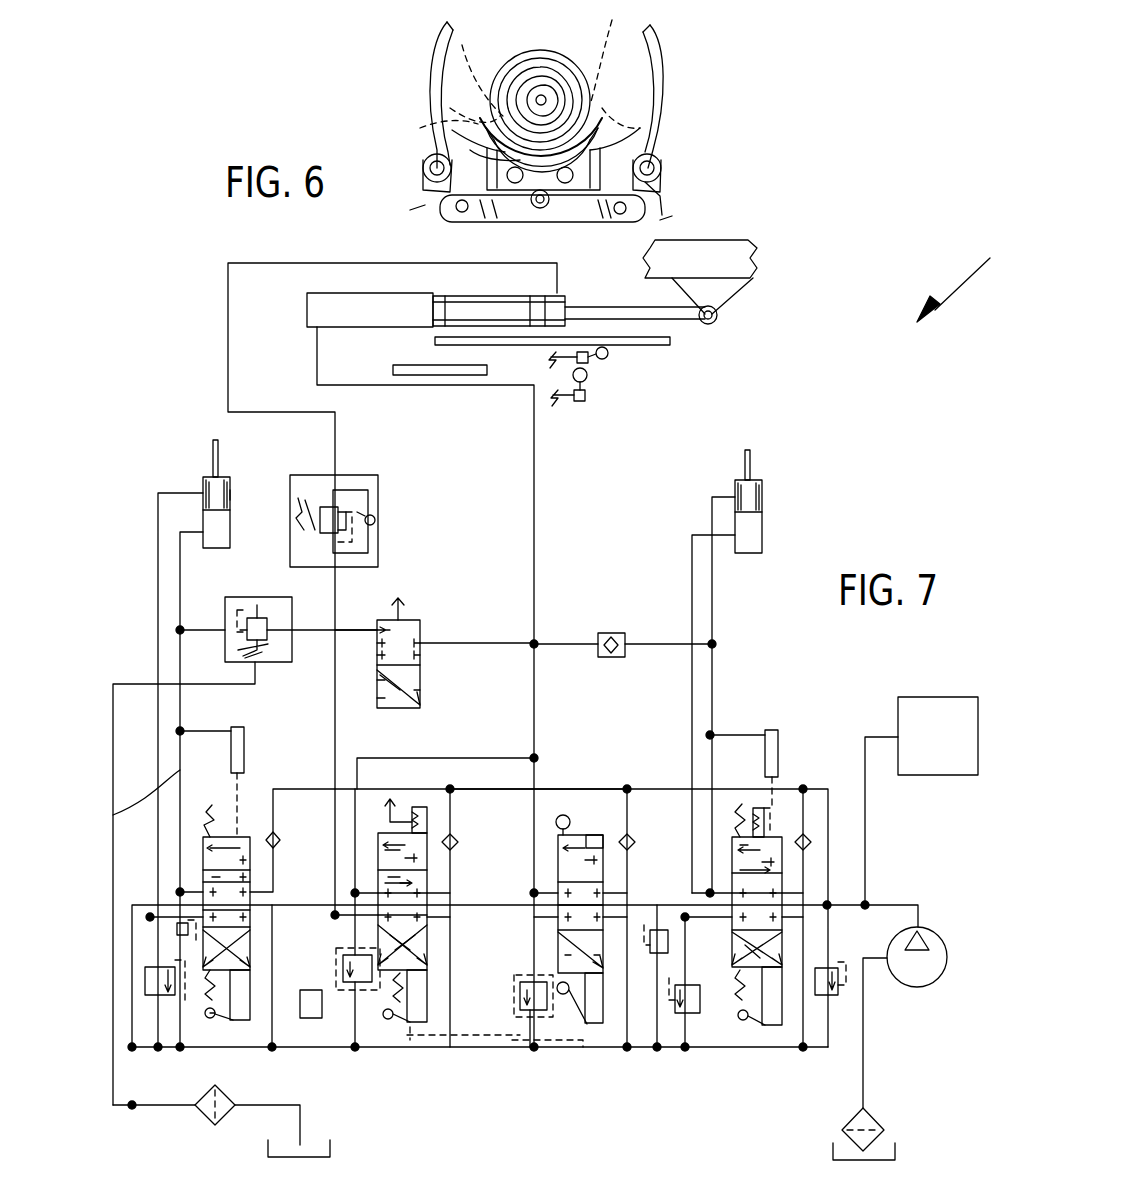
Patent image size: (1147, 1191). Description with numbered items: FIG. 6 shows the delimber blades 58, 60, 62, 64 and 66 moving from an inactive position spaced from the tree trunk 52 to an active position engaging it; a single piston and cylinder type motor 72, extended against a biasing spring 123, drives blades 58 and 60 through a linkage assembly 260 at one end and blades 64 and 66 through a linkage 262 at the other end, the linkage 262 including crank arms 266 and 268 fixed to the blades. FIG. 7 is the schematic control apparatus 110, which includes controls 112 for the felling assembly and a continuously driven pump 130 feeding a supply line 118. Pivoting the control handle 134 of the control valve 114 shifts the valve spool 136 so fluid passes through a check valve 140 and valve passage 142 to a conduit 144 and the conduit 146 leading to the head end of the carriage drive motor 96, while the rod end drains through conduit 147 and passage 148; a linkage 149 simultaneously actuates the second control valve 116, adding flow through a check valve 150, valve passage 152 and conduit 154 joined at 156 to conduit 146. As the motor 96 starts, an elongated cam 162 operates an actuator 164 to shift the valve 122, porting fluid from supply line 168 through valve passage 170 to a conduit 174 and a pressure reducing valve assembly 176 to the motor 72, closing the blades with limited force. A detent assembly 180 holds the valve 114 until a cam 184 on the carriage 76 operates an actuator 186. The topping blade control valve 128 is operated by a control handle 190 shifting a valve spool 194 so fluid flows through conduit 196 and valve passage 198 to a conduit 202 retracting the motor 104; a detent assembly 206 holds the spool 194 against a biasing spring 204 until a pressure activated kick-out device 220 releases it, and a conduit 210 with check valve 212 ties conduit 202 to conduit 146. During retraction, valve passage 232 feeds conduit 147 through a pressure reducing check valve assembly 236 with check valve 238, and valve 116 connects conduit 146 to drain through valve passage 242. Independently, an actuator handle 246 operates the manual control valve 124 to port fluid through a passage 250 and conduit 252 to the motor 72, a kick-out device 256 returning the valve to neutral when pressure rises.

In FIG. 6, the tree trunk 52 is at (540, 50).
In FIG. 6, the delimbing blade 58 is at (458, 45).
In FIG. 6, the delimbing blade 66 is at (620, 35).
In FIG. 6, the delimbing blade 60 is at (428, 128).
In FIG. 6, the delimbing blade 64 is at (655, 168).
In FIG. 6, the delimbing blade 62 is at (567, 212).
In FIG. 6, the crank arm 266 is at (530, 222).
In FIG. 6, the crank arm 268 is at (668, 204).
In FIG. 6, the linkage assembly 260 is at (412, 209).
In FIG. 6, the linkage 262 is at (672, 216).
In FIG. 7, the carriage 76 is at (757, 268).
In FIG. 7, the control apparatus 110 is at (985, 266).
In FIG. 7, the carriage drive motor 96 is at (307, 312).
In FIG. 7, the conduit 146 is at (534, 462).
In FIG. 7, the cam 184 is at (408, 365).
In FIG. 7, the elongated cam 162 is at (670, 343).
In FIG. 7, the actuator 164 is at (604, 360).
In FIG. 7, the actuator 186 is at (585, 396).
In FIG. 7, the piston and cylinder type motor 72 is at (200, 480).
In FIG. 7, the biasing spring 123 is at (255, 492).
In FIG. 7, the pressure reducing valve assembly 176 is at (260, 662).
In FIG. 7, the pressure reducing check valve assembly 236 is at (312, 475).
In FIG. 7, the check valve 238 is at (375, 516).
In FIG. 7, the valve 122 is at (420, 632).
In FIG. 7, the conduit 174 is at (378, 590).
In FIG. 7, the valve passage 170 is at (400, 690).
In FIG. 7, the supply line 168 is at (510, 630).
In FIG. 7, the connection 156 is at (538, 648).
In FIG. 7, the check valve 212 is at (614, 633).
In FIG. 7, the conduit 210 is at (648, 644).
In FIG. 7, the conduit 202 is at (716, 598).
In FIG. 7, the motor 104 is at (765, 498).
In FIG. 7, the controls 112 is at (978, 758).
In FIG. 7, the conduit 252 is at (120, 810).
In FIG. 7, the valve kick-out device 256 is at (244, 732).
In FIG. 7, the conduit 147 is at (335, 760).
In FIG. 7, the conduit 144 is at (474, 757).
In FIG. 7, the supply line 118 is at (584, 790).
In FIG. 7, the conduit 154 is at (512, 794).
In FIG. 7, the passage 250 is at (222, 845).
In FIG. 7, the actuator handle 246 is at (230, 1021).
In FIG. 7, the manually operable control valve 124 is at (208, 1040).
In FIG. 7, the control valve 114 is at (420, 1060).
In FIG. 7, the detent assembly 180 is at (428, 800).
In FIG. 7, the check valve 140 is at (455, 840).
In FIG. 7, the valve passage 142 is at (405, 858).
In FIG. 7, the passage 148 is at (400, 883).
In FIG. 7, the valve spool 136 is at (410, 950).
In FIG. 7, the valve passage 232 is at (415, 935).
In FIG. 7, the control handle 134 is at (385, 1014).
In FIG. 7, the linkage 149 is at (520, 1052).
In FIG. 7, the control valve 116 is at (590, 1062).
In FIG. 7, the control handle 190 is at (576, 800).
In FIG. 7, the valve passage 152 is at (595, 838).
In FIG. 7, the check valve 150 is at (630, 840).
In FIG. 7, the valve passage 242 is at (570, 990).
In FIG. 7, the topping blade control valve 128 is at (765, 1062).
In FIG. 7, the detent assembly 206 is at (768, 800).
In FIG. 7, the biasing spring 204 is at (730, 815).
In FIG. 7, the pressure activated valve kick-out device 220 is at (778, 745).
In FIG. 7, the valve passage 198 is at (733, 845).
In FIG. 7, the conduit 196 is at (803, 815).
In FIG. 7, the valve spool 194 is at (745, 948).
In FIG. 7, the pump 130 is at (938, 980).